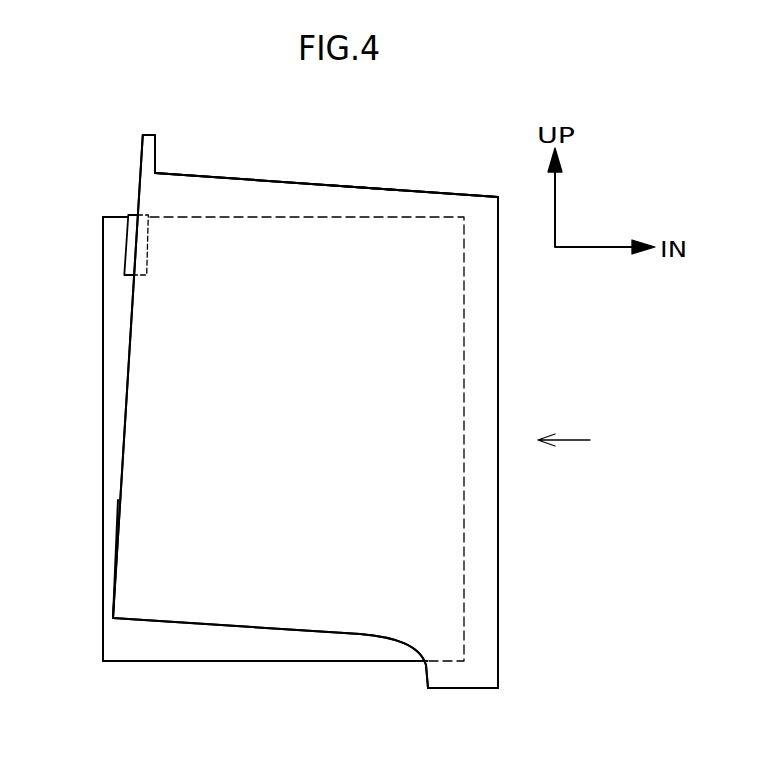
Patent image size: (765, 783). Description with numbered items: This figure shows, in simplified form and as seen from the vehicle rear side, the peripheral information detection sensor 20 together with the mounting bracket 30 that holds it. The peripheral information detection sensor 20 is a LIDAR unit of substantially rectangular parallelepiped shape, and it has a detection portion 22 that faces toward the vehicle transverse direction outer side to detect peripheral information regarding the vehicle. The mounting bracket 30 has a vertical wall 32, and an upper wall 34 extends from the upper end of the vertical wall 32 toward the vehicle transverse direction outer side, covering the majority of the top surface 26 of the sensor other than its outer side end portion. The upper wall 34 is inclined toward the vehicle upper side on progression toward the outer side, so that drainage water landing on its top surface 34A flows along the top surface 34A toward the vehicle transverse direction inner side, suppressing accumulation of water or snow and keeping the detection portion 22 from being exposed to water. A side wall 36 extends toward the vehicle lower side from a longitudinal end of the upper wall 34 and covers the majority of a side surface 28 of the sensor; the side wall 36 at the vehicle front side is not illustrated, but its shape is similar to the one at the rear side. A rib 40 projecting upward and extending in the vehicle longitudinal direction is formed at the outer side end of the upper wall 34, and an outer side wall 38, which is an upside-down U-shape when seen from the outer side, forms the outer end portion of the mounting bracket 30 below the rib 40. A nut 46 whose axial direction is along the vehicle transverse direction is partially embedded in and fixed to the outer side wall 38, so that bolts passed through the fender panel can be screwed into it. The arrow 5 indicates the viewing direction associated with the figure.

The viewing direction arrow 5 is at (570, 440).
The peripheral information detection sensor 20 is at (87, 655).
The detection portion 22 is at (103, 437).
The top surface 26 is at (210, 217).
The side surfaces 28 is at (220, 643).
The mounting bracket 30 is at (307, 159).
The vertical wall 32 is at (498, 517).
The upper wall 34 is at (254, 168).
The top surface 34A is at (343, 185).
The side wall 36 is at (165, 370).
The outer side wall 38 is at (112, 562).
The rib 40 is at (157, 147).
The nut 46 is at (125, 252).